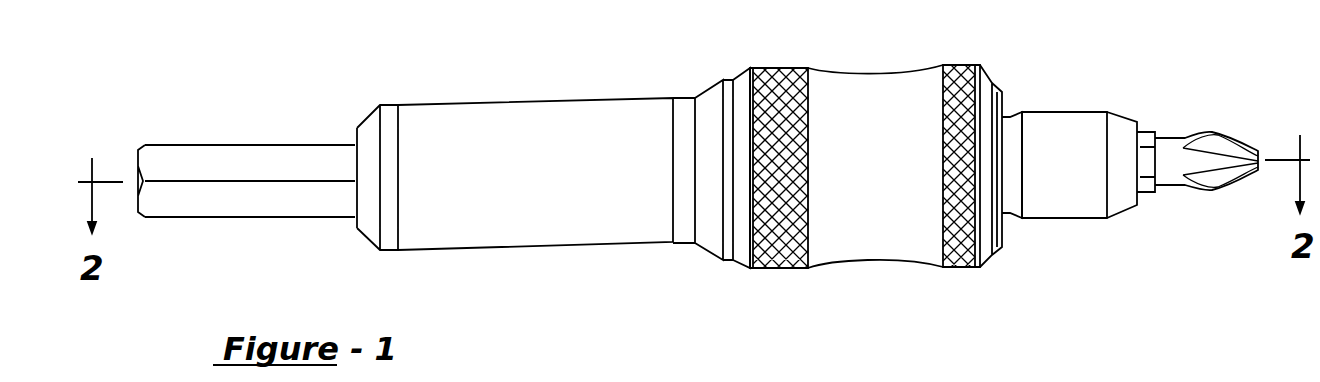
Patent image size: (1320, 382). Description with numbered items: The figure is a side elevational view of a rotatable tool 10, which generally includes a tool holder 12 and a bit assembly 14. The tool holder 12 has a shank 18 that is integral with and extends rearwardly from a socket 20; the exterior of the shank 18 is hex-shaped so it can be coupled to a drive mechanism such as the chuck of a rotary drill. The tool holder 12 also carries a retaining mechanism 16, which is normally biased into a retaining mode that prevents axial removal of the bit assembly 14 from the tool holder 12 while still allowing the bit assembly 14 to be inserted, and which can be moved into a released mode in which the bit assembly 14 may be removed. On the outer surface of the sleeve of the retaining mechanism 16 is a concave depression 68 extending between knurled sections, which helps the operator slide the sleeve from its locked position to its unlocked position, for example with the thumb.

The rotatable tool 10 is at (1050, 82).
The tool holder 12 is at (529, 85).
The bit assembly 14 is at (1122, 104).
The retaining mechanism 16 is at (918, 68).
The shank 18 is at (263, 145).
The socket 20 is at (610, 98).
The concave depression 68 is at (868, 75).